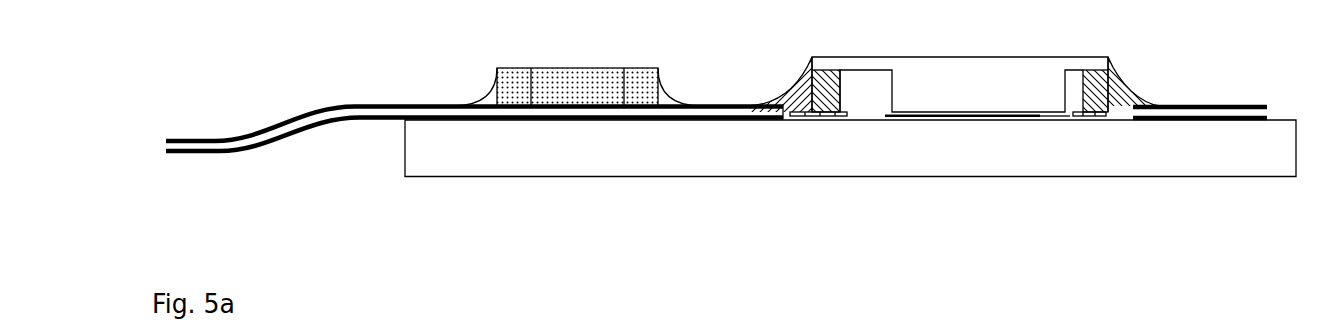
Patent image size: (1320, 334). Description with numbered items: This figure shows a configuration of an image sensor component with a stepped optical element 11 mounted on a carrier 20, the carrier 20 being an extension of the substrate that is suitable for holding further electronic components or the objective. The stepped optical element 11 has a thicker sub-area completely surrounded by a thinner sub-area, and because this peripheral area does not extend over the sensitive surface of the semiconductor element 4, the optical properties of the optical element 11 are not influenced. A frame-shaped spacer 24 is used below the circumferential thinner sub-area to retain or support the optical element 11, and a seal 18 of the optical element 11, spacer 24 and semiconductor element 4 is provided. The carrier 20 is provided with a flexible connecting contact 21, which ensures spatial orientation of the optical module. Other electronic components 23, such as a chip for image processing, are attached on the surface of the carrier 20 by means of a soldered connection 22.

The semiconductor element 4 is at (1062, 119).
The stepped optical element 11 is at (968, 78).
The seal 18 is at (1135, 86).
The carrier 20 is at (1195, 167).
The flexible connecting contact 21 is at (315, 116).
The soldered connection 22 is at (491, 93).
The electronic components (SMD components) 23 is at (576, 77).
The frame-shaped spacer 24 is at (825, 80).